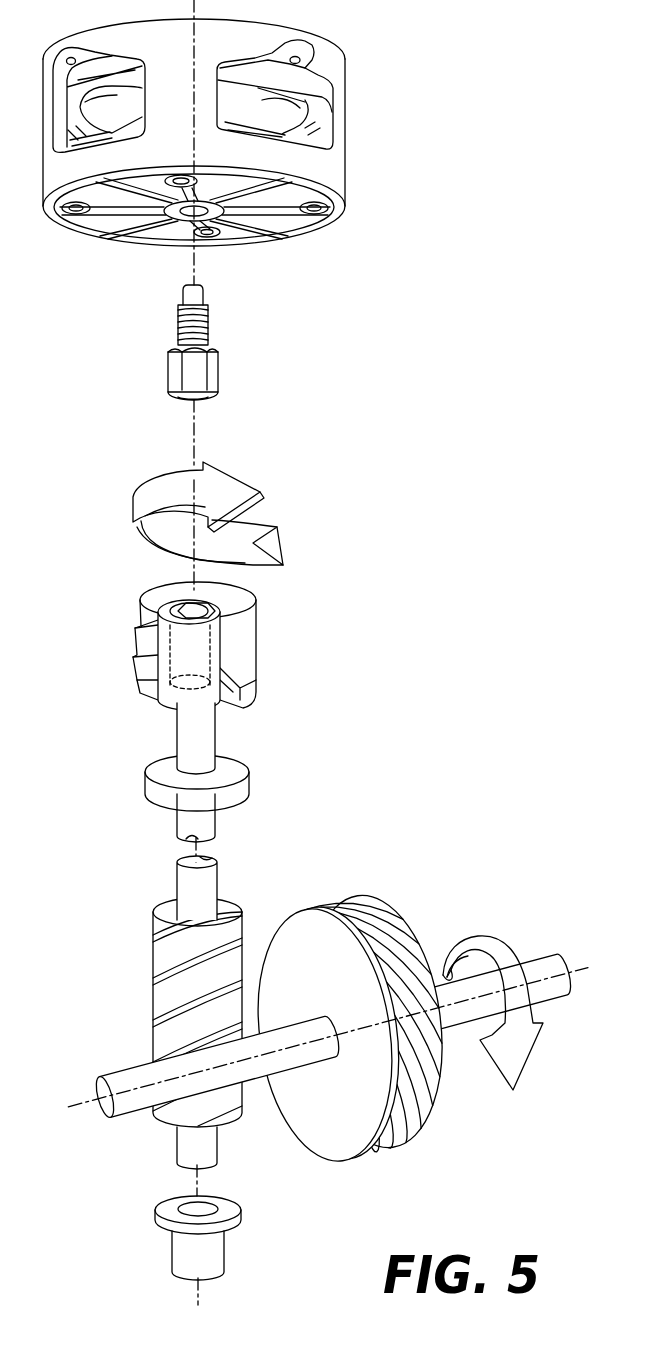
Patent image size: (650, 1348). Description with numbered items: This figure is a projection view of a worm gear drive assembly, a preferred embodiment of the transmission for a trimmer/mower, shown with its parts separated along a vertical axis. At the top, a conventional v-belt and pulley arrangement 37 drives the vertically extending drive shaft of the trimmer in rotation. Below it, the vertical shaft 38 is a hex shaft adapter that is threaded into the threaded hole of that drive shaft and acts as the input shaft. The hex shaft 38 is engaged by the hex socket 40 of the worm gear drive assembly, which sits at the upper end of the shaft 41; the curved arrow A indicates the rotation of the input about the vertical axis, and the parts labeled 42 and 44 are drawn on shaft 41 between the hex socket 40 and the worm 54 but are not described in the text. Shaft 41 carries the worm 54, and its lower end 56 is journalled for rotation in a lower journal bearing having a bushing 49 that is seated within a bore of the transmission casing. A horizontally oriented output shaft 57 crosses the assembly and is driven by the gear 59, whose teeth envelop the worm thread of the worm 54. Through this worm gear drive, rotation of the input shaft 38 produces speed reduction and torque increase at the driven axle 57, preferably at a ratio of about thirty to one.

The v-belt and pulley arrangement 37 is at (288, 118).
The vertical shaft 38 is at (221, 366).
The rotation direction A is at (132, 513).
The hex socket 40 is at (167, 596).
The ratchet nut 42 is at (140, 650).
The shaft 41 is at (177, 736).
The disc 44 is at (145, 790).
The worm 54 is at (153, 975).
The end 56 is at (219, 1150).
The output shaft 57 is at (117, 1072).
The gear 59 is at (422, 1132).
The bushing 49 is at (172, 1258).